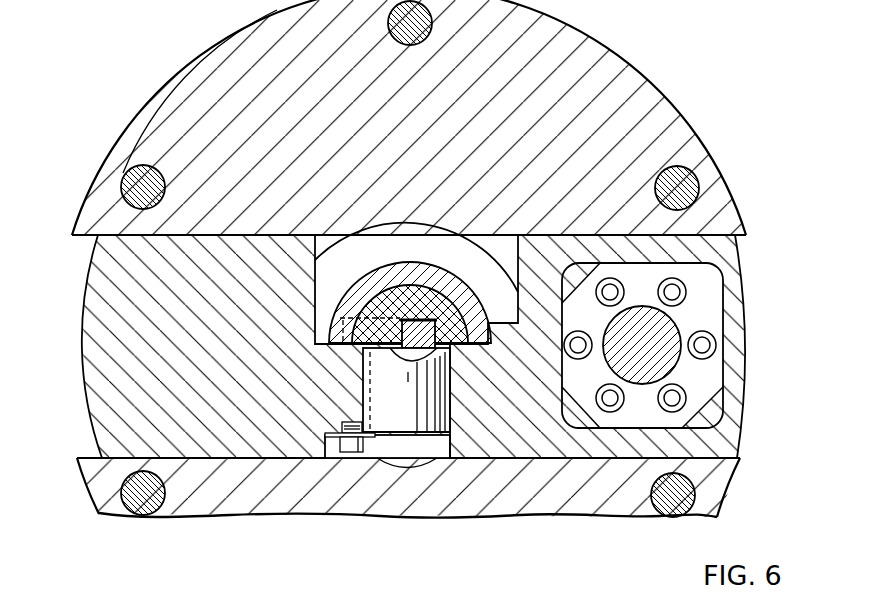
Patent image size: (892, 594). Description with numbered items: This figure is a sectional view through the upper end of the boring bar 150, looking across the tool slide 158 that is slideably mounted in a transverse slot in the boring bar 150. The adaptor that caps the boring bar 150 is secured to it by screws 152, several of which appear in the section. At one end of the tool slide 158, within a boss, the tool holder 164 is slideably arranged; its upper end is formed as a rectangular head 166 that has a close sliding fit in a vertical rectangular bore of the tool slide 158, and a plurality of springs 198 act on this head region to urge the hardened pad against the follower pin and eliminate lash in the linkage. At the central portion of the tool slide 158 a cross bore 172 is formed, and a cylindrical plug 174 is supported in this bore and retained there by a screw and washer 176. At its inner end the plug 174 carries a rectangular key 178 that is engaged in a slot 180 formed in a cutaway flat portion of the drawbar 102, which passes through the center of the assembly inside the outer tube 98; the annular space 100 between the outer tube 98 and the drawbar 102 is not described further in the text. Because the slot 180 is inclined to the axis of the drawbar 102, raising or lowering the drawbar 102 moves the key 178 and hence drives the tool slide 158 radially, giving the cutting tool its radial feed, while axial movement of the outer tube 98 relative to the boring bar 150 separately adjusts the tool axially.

The outer tube 98 is at (415, 235).
The spherical chamber 100 is at (373, 278).
The drawbar 102 is at (373, 298).
The boring bar 150 is at (627, 78).
The screws 152 is at (128, 173).
The tool slide 158 is at (728, 444).
The tool holder 164 is at (620, 328).
The rectangular head 166 is at (708, 314).
The cross bore 172 is at (448, 447).
The cylindrical plug 174 is at (444, 385).
The screw and washer 176 is at (348, 447).
The rectangular key 178 is at (430, 338).
The slot 180 is at (415, 317).
The springs 198 is at (718, 343).